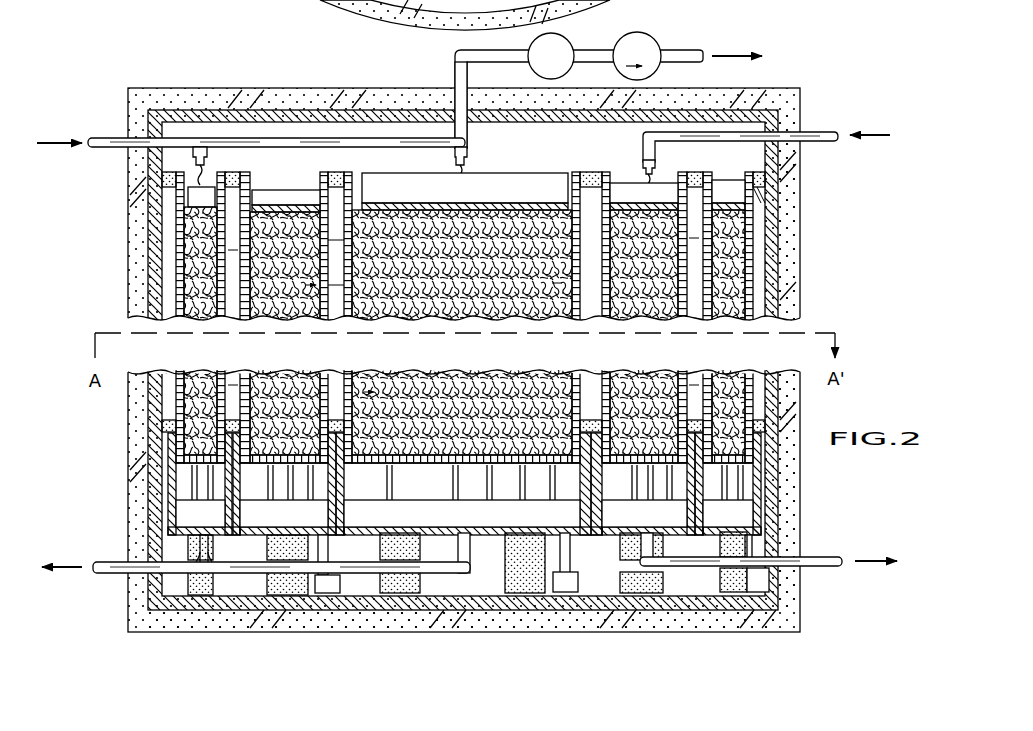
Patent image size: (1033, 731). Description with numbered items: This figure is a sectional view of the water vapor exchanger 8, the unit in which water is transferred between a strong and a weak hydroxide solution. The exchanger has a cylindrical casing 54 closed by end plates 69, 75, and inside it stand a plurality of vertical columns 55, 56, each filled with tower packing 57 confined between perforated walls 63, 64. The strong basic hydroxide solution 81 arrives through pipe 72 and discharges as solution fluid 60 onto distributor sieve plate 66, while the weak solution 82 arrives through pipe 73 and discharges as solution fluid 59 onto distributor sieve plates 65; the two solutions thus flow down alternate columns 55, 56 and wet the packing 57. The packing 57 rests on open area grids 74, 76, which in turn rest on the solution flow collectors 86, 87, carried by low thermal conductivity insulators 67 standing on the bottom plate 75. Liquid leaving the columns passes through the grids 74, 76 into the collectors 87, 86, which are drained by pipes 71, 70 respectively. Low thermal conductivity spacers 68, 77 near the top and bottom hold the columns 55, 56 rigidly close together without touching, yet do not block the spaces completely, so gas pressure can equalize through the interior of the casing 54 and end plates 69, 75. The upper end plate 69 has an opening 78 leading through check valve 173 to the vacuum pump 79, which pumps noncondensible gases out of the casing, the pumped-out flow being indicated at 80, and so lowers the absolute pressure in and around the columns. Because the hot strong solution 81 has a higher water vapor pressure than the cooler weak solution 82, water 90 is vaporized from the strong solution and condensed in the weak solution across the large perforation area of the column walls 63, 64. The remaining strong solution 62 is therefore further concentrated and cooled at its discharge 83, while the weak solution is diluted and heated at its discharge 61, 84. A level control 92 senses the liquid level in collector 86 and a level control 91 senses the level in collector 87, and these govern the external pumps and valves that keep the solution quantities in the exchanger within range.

The vapor exchanger 8 is at (128, 210).
The cylindrical casing 54 is at (800, 236).
The vertical column 55 is at (222, 168).
The vertical column 56 is at (308, 172).
The tower packing 57 is at (464, 335).
The solution fluid 59 is at (195, 174).
The solution fluid 60 is at (262, 180).
The weak solution discharge 61 is at (192, 514).
The remaining strong solution 62 is at (266, 520).
The perforated wall 63 is at (179, 312).
The perforated wall 64 is at (266, 312).
The distributor sieve plate 65 is at (454, 195).
The distributor sieve plate 66 is at (257, 204).
The low thermal conductivity insulator 67 is at (498, 553).
The low thermal conductivity spacer 68 is at (350, 174).
The end plate 69 is at (553, 118).
The pipe 70 is at (833, 575).
The pipe 71 is at (110, 582).
The pipe 72 is at (815, 130).
The pipe 73 is at (91, 136).
The open area grid 74 is at (448, 470).
The bottom plate 75 is at (368, 630).
The open area grid 76 is at (294, 472).
The low thermal conductivity spacer 77 is at (170, 368).
The opening 78 is at (467, 128).
The vacuum pump 79 is at (670, 42).
The vapor flow direction 80 is at (734, 46).
The strong basic hydroxide solution 81 is at (865, 130).
The weak solution 82 is at (46, 140).
The strong solution discharge 83 is at (864, 562).
The weak solution discharge 84 is at (56, 564).
The solution flow collector 86 is at (261, 558).
The solution flow collector 87 is at (320, 558).
The water 90 is at (237, 368).
The level control 91 is at (571, 566).
The level control 92 is at (335, 587).
The check valve 173 is at (571, 36).